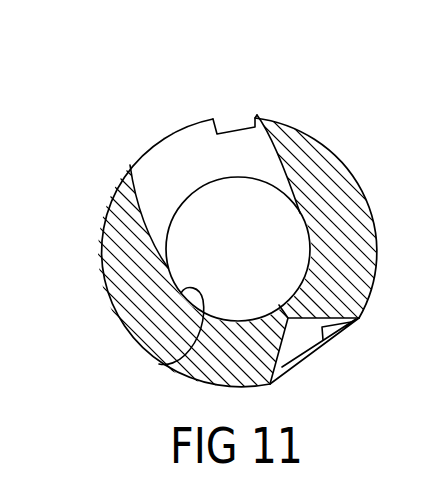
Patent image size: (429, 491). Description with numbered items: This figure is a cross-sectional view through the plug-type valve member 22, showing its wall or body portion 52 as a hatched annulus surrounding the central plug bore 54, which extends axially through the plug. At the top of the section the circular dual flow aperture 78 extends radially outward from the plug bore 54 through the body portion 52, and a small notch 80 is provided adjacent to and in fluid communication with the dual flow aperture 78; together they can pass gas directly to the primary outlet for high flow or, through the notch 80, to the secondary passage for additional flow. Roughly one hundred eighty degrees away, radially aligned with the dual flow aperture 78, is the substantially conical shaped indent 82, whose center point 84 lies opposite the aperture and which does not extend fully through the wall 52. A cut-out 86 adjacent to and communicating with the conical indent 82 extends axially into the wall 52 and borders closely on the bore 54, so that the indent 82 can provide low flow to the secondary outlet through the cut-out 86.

The valve member 22 is at (80, 122).
The body portion 52 is at (110, 257).
The plug bore 54 is at (159, 364).
The dual flow aperture 78 is at (140, 189).
The notch 80 is at (225, 125).
The conical shaped indent 82 is at (288, 318).
The center point 84 is at (312, 348).
The cut-out 86 is at (337, 330).